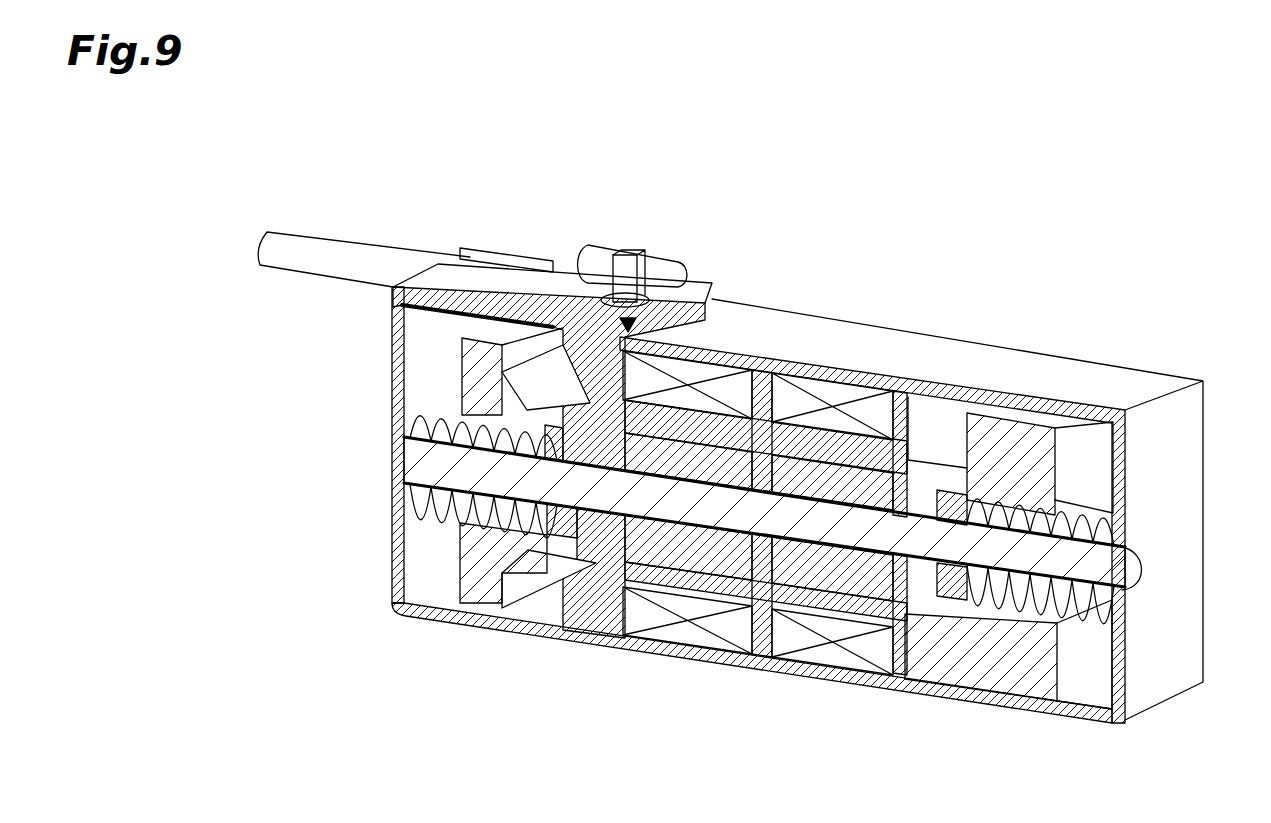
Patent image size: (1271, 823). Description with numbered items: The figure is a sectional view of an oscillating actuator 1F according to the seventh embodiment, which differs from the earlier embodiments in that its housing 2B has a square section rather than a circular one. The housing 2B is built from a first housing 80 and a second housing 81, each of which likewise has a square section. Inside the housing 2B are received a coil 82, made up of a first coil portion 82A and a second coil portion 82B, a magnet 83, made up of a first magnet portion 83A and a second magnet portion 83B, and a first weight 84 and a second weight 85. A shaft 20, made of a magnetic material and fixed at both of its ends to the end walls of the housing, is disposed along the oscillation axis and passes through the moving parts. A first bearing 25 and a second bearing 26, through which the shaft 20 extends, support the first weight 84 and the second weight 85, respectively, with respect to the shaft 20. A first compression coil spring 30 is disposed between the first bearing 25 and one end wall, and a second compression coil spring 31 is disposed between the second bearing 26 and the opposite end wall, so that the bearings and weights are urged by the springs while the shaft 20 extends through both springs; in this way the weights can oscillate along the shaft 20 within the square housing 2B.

The oscillating actuator 1F is at (434, 156).
The housing 2B is at (642, 769).
The shaft 20 is at (1118, 570).
The first bearing 25 is at (942, 600).
The second bearing 26 is at (545, 565).
The first compression coil spring 30 is at (1095, 513).
The second compression coil spring 31 is at (427, 413).
The first housing 80 is at (646, 658).
The second housing 81 is at (478, 632).
The coil 82 is at (765, 364).
The first coil portion 82A is at (838, 348).
The second coil portion 82B is at (693, 373).
The magnet 83 is at (765, 672).
The first magnet portion 83A is at (852, 603).
The second magnet portion 83B is at (722, 600).
The first weight 84 is at (1088, 448).
The second weight 85 is at (455, 525).